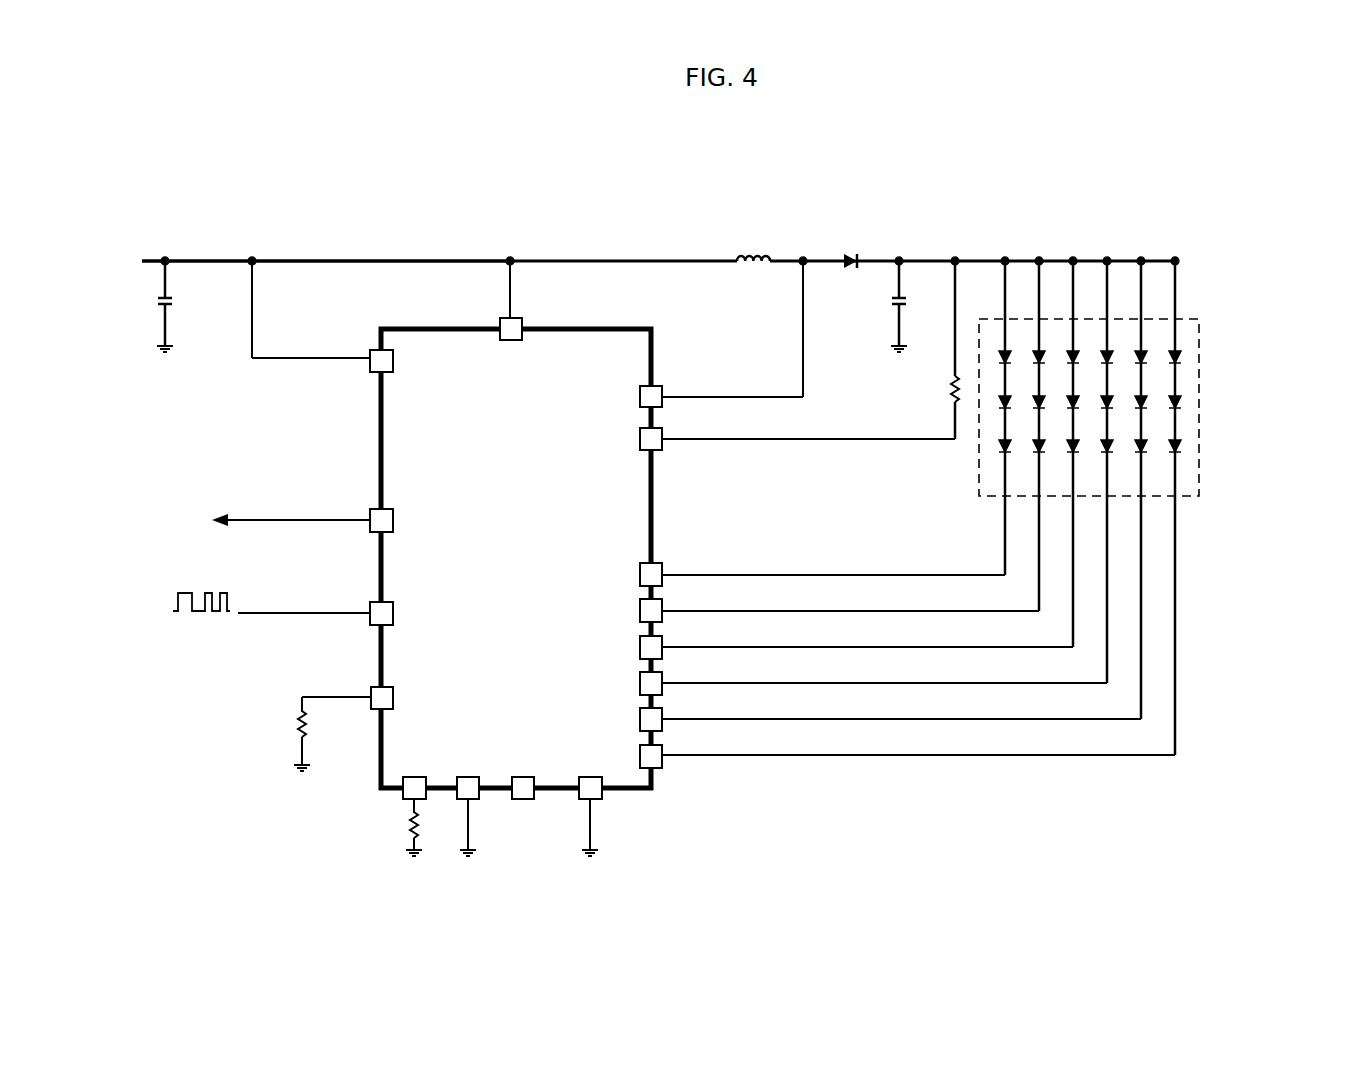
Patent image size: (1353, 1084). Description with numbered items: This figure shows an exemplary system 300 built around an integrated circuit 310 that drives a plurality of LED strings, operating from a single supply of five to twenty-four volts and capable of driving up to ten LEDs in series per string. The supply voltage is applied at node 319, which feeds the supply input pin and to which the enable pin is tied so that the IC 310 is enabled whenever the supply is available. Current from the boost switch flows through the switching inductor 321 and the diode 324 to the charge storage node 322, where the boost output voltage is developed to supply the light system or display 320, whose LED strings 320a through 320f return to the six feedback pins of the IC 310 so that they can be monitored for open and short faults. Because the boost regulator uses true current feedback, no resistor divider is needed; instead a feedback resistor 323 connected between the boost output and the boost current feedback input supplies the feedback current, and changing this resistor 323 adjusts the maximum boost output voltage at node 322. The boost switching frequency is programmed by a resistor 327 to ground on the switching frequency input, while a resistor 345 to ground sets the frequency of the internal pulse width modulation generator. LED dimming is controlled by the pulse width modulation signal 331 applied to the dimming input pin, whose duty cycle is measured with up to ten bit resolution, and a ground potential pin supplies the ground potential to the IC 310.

The system 300 is at (284, 188).
The integrated circuit 310 is at (589, 326).
The node 319 is at (433, 255).
The light system/display 320 is at (1097, 506).
The LED string 320a is at (1002, 462).
The LED string 320f is at (1182, 329).
The inductor 321 is at (755, 253).
The node 322 is at (926, 255).
The resistor 323 is at (950, 381).
The diode 324 is at (845, 252).
The resistor 327 is at (410, 818).
The PWM signal 331 is at (184, 590).
The resistor 345 is at (297, 718).